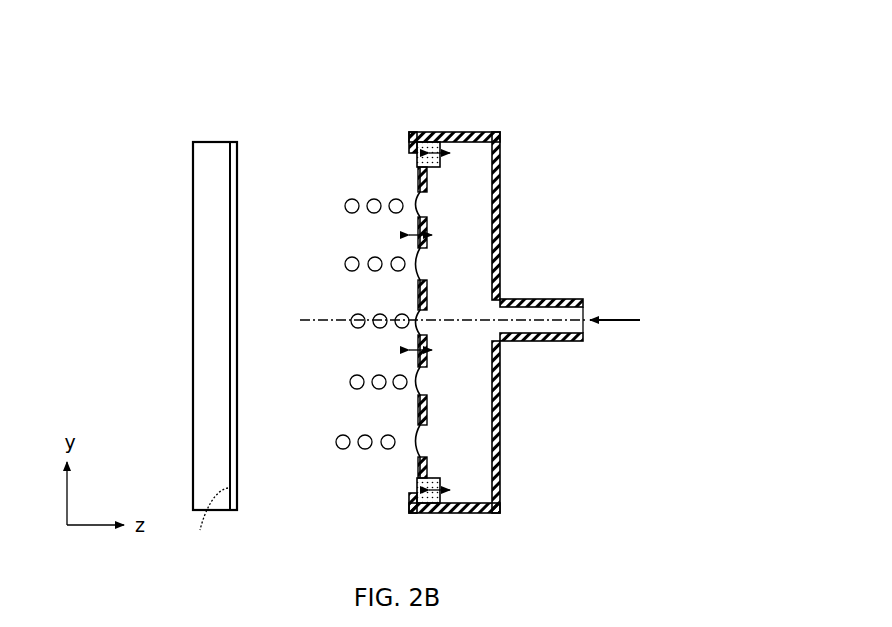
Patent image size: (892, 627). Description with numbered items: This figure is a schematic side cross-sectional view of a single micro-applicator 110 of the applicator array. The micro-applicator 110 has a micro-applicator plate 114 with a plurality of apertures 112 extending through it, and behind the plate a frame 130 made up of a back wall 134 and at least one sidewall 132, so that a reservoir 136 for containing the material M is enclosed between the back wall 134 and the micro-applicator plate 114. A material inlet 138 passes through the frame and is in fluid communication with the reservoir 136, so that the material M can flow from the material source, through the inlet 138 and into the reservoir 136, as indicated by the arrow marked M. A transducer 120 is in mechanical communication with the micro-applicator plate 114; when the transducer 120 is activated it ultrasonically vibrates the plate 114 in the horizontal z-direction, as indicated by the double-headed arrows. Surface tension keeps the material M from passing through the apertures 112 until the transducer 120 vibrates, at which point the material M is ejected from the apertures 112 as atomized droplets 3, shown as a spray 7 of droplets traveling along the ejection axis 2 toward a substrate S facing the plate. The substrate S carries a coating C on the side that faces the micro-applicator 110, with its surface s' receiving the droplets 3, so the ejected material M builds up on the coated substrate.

The micro-applicator 110 is at (659, 78).
The frame 130 is at (508, 130).
The sidewall 132 is at (477, 133).
The back wall 134 is at (499, 453).
The reservoir 136 is at (499, 260).
The material inlet 138 is at (568, 300).
The transducer 120 is at (427, 133).
The micro-applicator plate 114 is at (413, 177).
The apertures 112 is at (423, 205).
The droplets 7 is at (343, 302).
The atomized droplets 3 is at (348, 213).
The ejection axis 2 is at (314, 321).
The substrate S is at (213, 142).
The coating layer C is at (233, 462).
The substrate surface s' is at (209, 523).
The material M is at (631, 321).